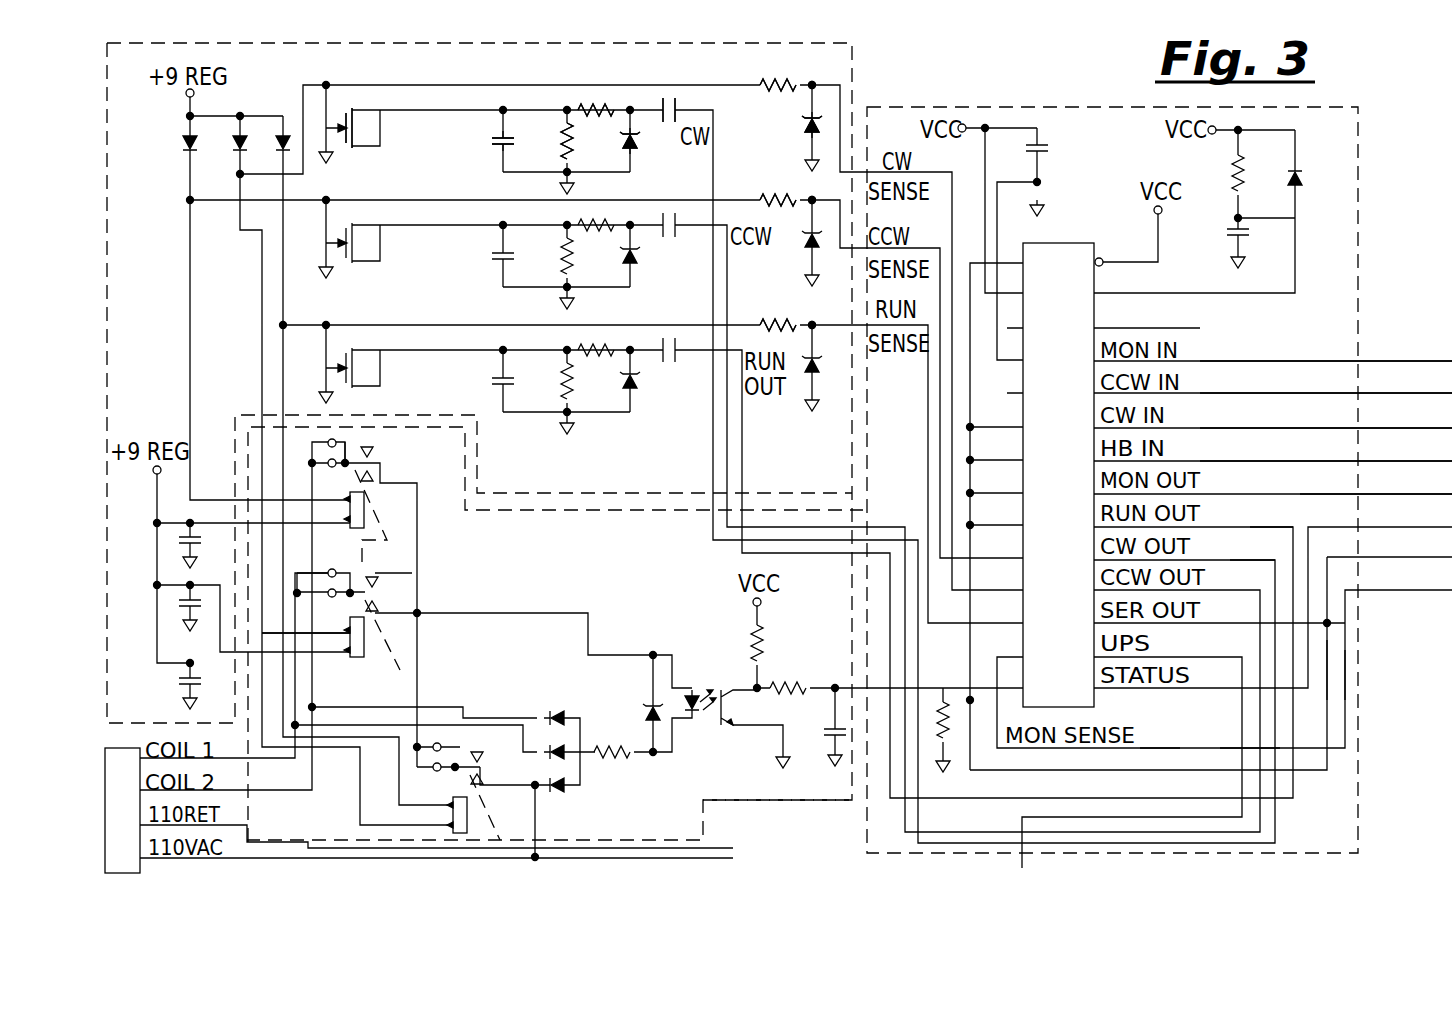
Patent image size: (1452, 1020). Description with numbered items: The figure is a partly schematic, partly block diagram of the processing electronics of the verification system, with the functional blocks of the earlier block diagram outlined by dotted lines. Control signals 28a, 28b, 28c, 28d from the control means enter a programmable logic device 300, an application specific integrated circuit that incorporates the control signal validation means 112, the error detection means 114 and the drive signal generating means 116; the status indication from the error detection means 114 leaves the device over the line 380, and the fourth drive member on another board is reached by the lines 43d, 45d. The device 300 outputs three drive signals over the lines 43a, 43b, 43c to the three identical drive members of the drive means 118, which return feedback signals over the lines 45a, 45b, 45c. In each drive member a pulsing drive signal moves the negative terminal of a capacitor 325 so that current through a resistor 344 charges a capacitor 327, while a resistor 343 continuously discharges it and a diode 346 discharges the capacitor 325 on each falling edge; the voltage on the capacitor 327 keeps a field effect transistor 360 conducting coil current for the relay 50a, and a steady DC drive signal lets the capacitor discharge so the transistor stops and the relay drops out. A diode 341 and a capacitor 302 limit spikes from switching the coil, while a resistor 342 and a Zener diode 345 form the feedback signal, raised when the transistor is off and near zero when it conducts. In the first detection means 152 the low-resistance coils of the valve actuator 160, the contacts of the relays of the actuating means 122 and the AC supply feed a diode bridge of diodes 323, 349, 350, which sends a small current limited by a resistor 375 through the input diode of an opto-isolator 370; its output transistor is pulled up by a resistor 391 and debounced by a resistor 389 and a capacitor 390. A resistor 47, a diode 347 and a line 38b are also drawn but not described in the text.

The drive means 118 is at (870, 58).
The control signal validation means 112 is at (975, 107).
The error detection means 114 is at (570, 251).
The drive signal generating means 116 is at (570, 376).
The actuating means 122 is at (243, 445).
The first detection means 152 is at (758, 803).
The valve actuator 160 is at (125, 748).
The programmable logic device 300 is at (1060, 243).
The capacitor 302 is at (180, 610).
The diode 323 is at (560, 792).
The capacitor 325 is at (668, 97).
The capacitor 327 is at (495, 144).
The diode 341 is at (237, 145).
The resistor 342 is at (770, 82).
The resistor 343 is at (565, 135).
The resistor 344 is at (593, 107).
The Zener diode 345 is at (803, 125).
The diode 346 is at (640, 141).
The zener diode 347 is at (651, 705).
The diode 349 is at (570, 757).
The diode 350 is at (560, 710).
The field effect transistor 360 is at (362, 118).
The opto-isolator 370 is at (700, 710).
The resistor 375 is at (623, 757).
The resistor 389 is at (787, 685).
The capacitor 390 is at (835, 745).
The resistor 391 is at (752, 640).
The resistor 47 is at (940, 687).
The relay 50a is at (353, 658).
The feedback signal line 45a is at (830, 72).
The feedback signal line 45b is at (808, 198).
The feedback signal line 45c is at (811, 323).
The feedback signal line 45d is at (1158, 745).
The control signal 28a is at (1315, 461).
The control signal 28b is at (1282, 428).
The control signal 28c is at (1250, 393).
The control signal 28d is at (1215, 360).
The drive signal line 43a is at (1243, 542).
The drive signal line 43b is at (1247, 735).
The drive signal line 43c is at (1252, 527).
The drive signal line 43d is at (1405, 494).
The status line 380 is at (1350, 600).
The status line 38b is at (1335, 645).